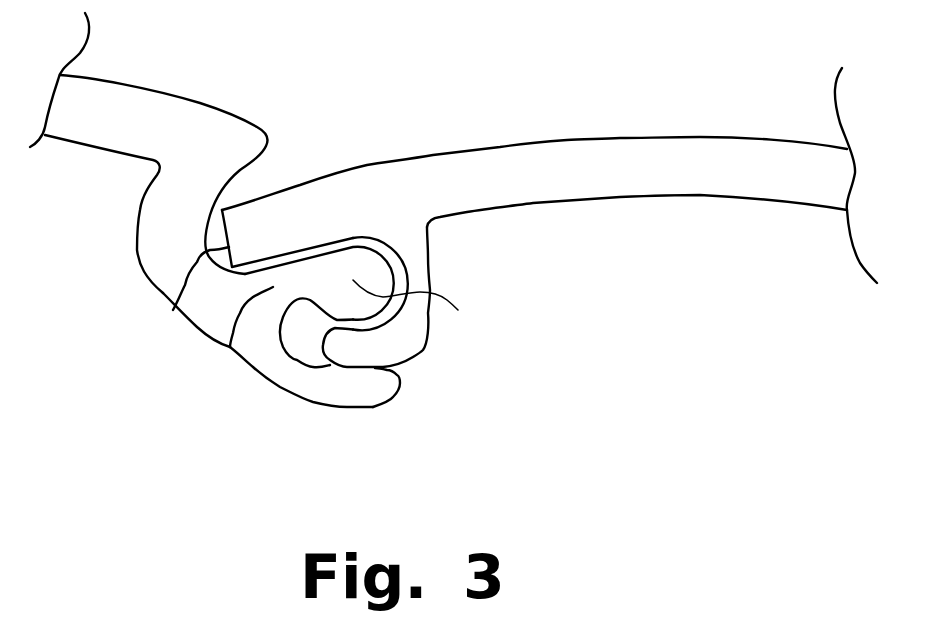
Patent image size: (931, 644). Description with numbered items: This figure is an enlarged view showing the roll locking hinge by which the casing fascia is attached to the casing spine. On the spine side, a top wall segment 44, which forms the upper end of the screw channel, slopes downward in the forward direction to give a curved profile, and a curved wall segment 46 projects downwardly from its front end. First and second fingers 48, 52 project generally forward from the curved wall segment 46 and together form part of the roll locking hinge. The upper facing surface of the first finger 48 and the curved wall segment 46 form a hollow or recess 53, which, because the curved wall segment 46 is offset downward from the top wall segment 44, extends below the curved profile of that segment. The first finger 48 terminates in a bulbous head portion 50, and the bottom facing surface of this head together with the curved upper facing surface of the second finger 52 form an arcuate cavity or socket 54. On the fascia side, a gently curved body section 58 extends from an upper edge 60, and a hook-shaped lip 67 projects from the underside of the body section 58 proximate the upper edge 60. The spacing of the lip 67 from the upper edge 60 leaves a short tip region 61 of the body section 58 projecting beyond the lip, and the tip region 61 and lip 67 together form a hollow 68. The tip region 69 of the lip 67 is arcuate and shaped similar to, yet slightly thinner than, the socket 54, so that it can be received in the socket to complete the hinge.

The top wall segment 44 is at (110, 100).
The curved wall segment 46 is at (156, 255).
The first finger 48 is at (230, 347).
The bulbous head portion 50 is at (422, 305).
The second finger 52 is at (323, 390).
The recess 53 is at (262, 177).
The socket 54 is at (300, 322).
The body section 58 is at (587, 153).
The upper edge 60 is at (177, 307).
The tip region 61 is at (308, 223).
The hook-shaped lip 67 is at (395, 330).
The hollow 68 is at (387, 260).
The tip region of lip 69 is at (353, 347).